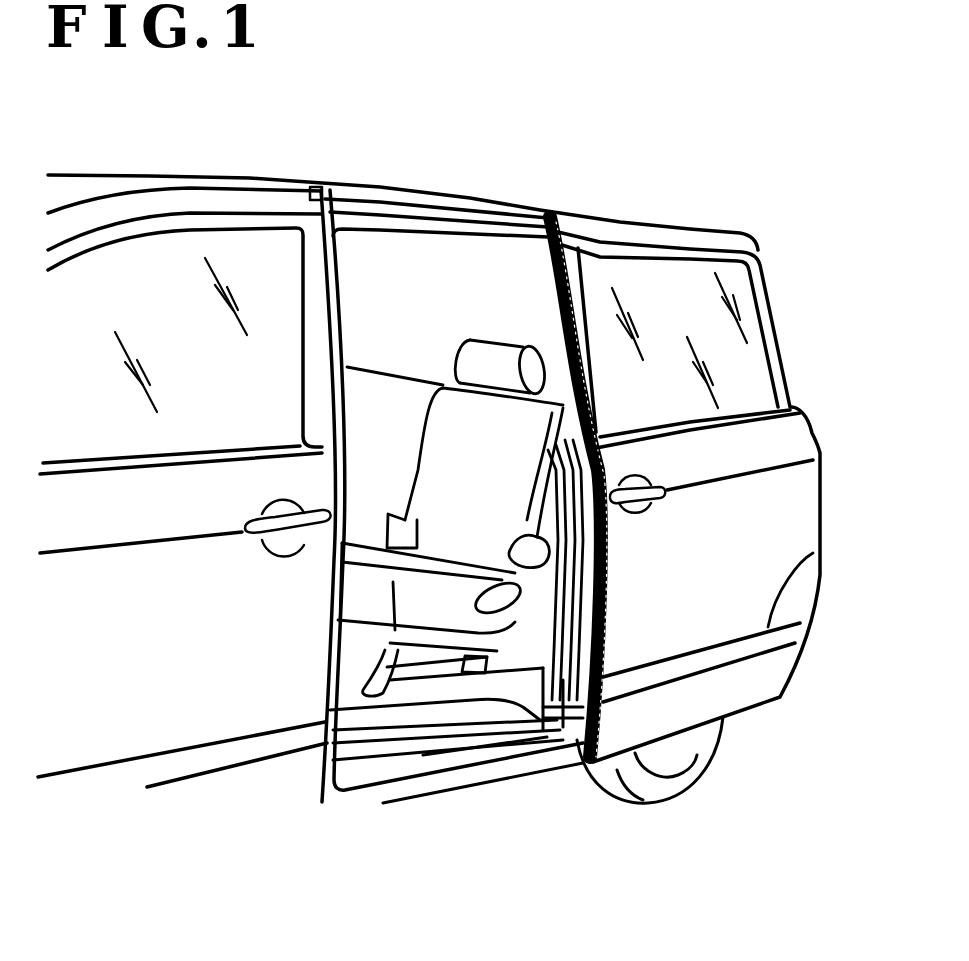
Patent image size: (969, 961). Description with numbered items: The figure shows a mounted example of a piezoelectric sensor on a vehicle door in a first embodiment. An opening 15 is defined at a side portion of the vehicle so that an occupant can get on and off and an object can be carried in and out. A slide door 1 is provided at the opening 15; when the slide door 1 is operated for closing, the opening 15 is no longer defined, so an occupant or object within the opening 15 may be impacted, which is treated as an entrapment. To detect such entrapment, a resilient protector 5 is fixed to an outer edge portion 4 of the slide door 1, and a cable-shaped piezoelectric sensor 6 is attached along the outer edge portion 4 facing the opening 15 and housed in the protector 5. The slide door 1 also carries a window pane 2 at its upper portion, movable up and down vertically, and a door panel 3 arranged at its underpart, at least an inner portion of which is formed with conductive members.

The slide door 1 is at (782, 496).
The window pane 2 is at (738, 303).
The door panel 3 is at (760, 577).
The outer edge portion 4 is at (610, 710).
The protector 5 is at (517, 487).
The piezoelectric sensor 6 is at (564, 326).
The opening 15 is at (462, 267).